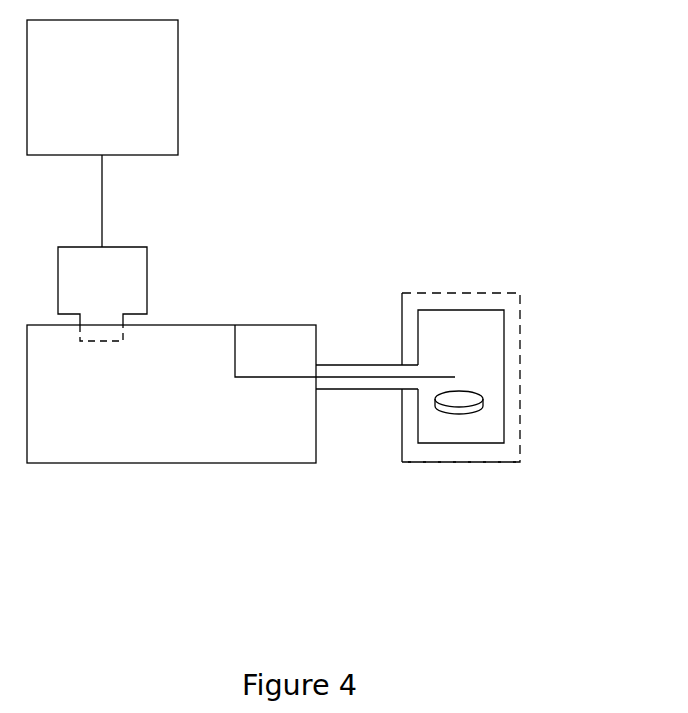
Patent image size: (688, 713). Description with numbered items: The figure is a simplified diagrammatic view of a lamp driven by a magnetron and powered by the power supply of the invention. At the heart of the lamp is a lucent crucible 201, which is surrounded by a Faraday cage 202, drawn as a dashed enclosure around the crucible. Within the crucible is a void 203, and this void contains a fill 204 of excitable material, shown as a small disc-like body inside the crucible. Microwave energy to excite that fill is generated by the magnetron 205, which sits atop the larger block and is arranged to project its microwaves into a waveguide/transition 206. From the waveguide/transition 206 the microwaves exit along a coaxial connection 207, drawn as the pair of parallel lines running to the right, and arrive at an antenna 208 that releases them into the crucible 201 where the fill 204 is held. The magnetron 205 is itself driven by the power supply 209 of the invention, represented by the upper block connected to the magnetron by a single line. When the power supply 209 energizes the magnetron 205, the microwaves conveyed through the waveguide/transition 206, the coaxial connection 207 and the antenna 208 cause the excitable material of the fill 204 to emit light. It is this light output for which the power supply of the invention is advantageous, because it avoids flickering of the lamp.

The lucent crucible 201 is at (463, 332).
The Faraday cage 202 is at (460, 462).
The void 203 is at (459, 413).
The fill 204 is at (459, 396).
The magnetron 205 is at (147, 281).
The waveguide/transition 206 is at (117, 463).
The coaxial connection 207 is at (370, 365).
The antenna 208 is at (459, 334).
The power supply 209 is at (178, 88).